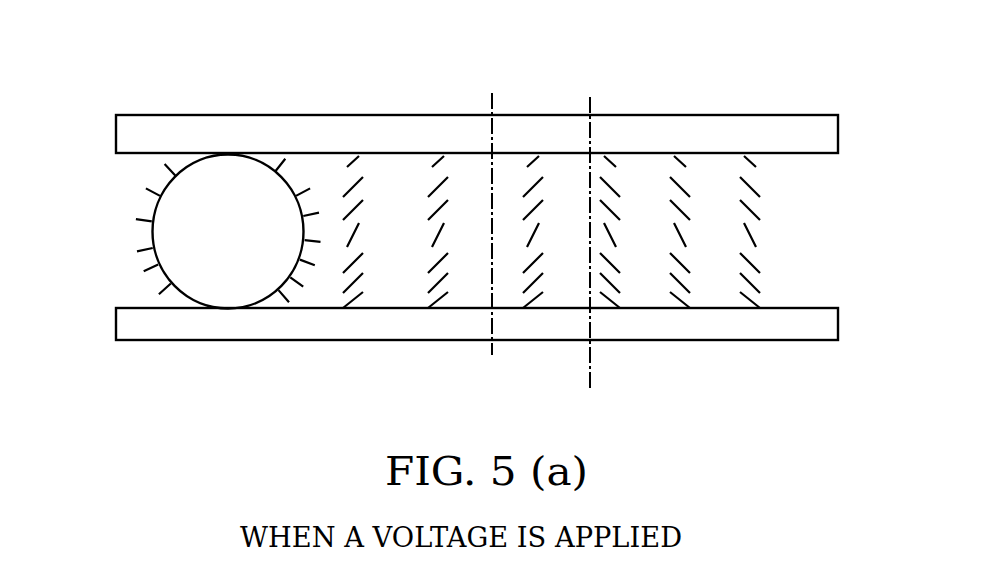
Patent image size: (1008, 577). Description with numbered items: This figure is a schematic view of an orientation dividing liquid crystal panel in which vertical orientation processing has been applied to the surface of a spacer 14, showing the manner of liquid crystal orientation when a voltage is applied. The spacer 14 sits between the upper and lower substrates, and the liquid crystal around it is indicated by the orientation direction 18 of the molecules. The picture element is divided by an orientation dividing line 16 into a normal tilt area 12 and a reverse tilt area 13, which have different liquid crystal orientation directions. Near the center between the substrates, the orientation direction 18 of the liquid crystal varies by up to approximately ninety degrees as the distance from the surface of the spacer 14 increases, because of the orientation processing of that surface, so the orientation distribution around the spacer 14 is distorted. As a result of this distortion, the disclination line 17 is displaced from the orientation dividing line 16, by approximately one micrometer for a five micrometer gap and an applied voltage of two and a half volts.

The normal tilt area 12 is at (417, 287).
The reverse tilt area 13 is at (627, 293).
The spacer 14 is at (187, 225).
The orientation dividing line 16 is at (492, 98).
The disclination line 17 is at (596, 388).
The orientation direction 18 is at (293, 173).